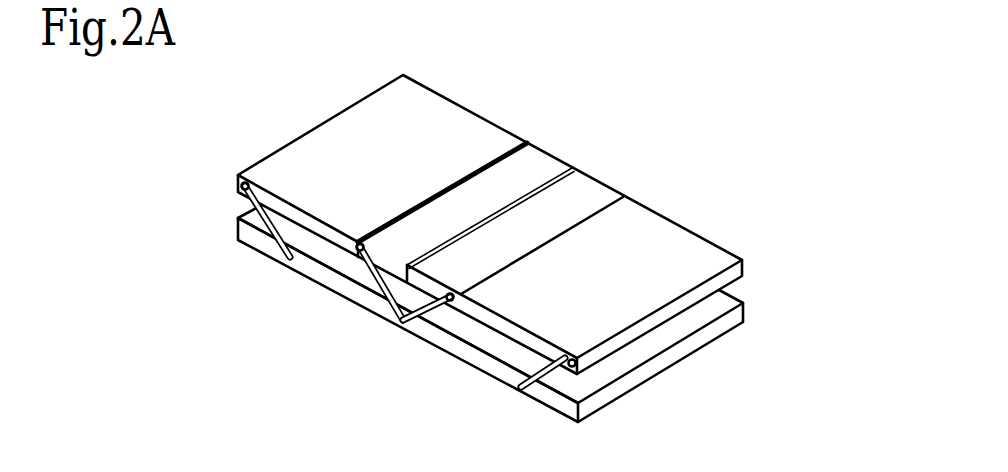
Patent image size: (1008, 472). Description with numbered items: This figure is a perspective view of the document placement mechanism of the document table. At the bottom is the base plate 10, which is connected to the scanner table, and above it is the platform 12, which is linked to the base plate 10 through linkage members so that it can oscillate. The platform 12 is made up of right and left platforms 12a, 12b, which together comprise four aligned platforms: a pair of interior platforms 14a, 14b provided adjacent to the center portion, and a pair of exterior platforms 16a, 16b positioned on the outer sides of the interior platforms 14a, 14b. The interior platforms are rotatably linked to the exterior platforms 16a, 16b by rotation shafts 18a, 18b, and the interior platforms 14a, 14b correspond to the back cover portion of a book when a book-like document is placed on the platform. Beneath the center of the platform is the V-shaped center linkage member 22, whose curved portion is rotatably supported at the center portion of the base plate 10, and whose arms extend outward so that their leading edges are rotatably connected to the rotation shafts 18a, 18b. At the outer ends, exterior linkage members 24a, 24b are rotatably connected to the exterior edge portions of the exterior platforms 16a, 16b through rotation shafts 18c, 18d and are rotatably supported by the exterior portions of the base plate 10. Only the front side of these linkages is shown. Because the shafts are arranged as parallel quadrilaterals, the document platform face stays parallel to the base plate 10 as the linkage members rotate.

The base plate 10 is at (672, 360).
The platform 12 is at (505, 187).
The right platform 12a is at (430, 135).
The left platform 12b is at (590, 225).
The interior platform 14a is at (485, 162).
The interior platform 14b is at (595, 193).
The exterior platform 16a is at (443, 118).
The exterior platform 16b is at (614, 231).
The rotation shaft 18a is at (342, 276).
The rotation shaft 18b is at (444, 308).
The rotation shaft 18c is at (240, 191).
The rotation shaft 18d is at (582, 366).
The center linkage member 22 is at (392, 308).
The exterior linkage member 24a is at (266, 243).
The exterior linkage member 24b is at (552, 373).